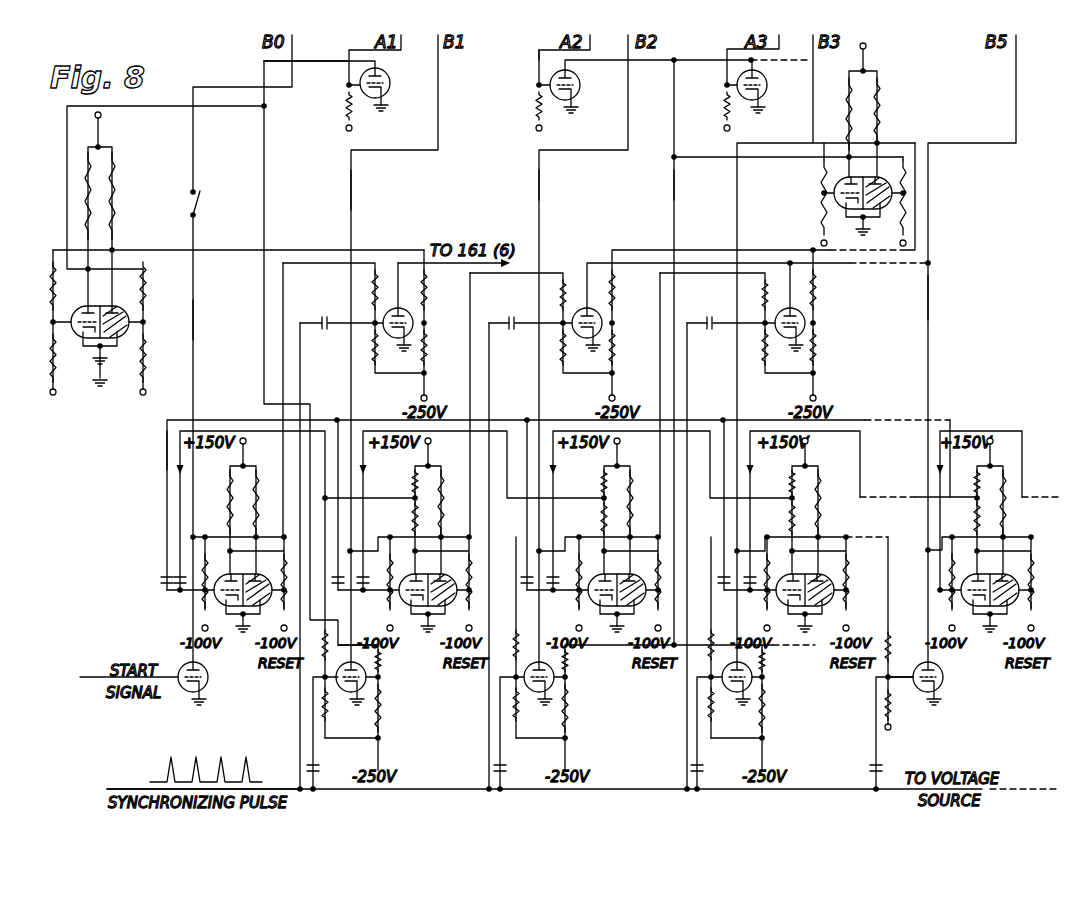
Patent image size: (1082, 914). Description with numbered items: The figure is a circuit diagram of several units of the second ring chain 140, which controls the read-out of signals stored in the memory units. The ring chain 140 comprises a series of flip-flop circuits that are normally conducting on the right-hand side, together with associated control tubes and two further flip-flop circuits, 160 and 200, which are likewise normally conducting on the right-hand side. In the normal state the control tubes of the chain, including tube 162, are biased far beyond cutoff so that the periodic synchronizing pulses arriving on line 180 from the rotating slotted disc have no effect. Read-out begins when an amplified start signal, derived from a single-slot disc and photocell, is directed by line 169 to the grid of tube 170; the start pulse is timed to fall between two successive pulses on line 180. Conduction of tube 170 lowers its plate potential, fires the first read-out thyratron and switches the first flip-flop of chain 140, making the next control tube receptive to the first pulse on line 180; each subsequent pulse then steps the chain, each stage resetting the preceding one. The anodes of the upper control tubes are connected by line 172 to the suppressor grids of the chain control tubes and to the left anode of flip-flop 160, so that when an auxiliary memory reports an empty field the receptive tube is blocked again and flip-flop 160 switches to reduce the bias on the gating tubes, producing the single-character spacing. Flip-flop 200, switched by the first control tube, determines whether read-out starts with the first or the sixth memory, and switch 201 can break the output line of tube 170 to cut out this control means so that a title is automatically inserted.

The flip-flop circuit 200 is at (72, 317).
The switch 201 is at (205, 204).
The line 172 is at (673, 192).
The flip-flop circuit 160 is at (874, 182).
The ring chain 140 is at (160, 467).
The tube 162 is at (943, 684).
The line 169 is at (96, 677).
The tube 170 is at (182, 690).
The line 180 is at (140, 788).